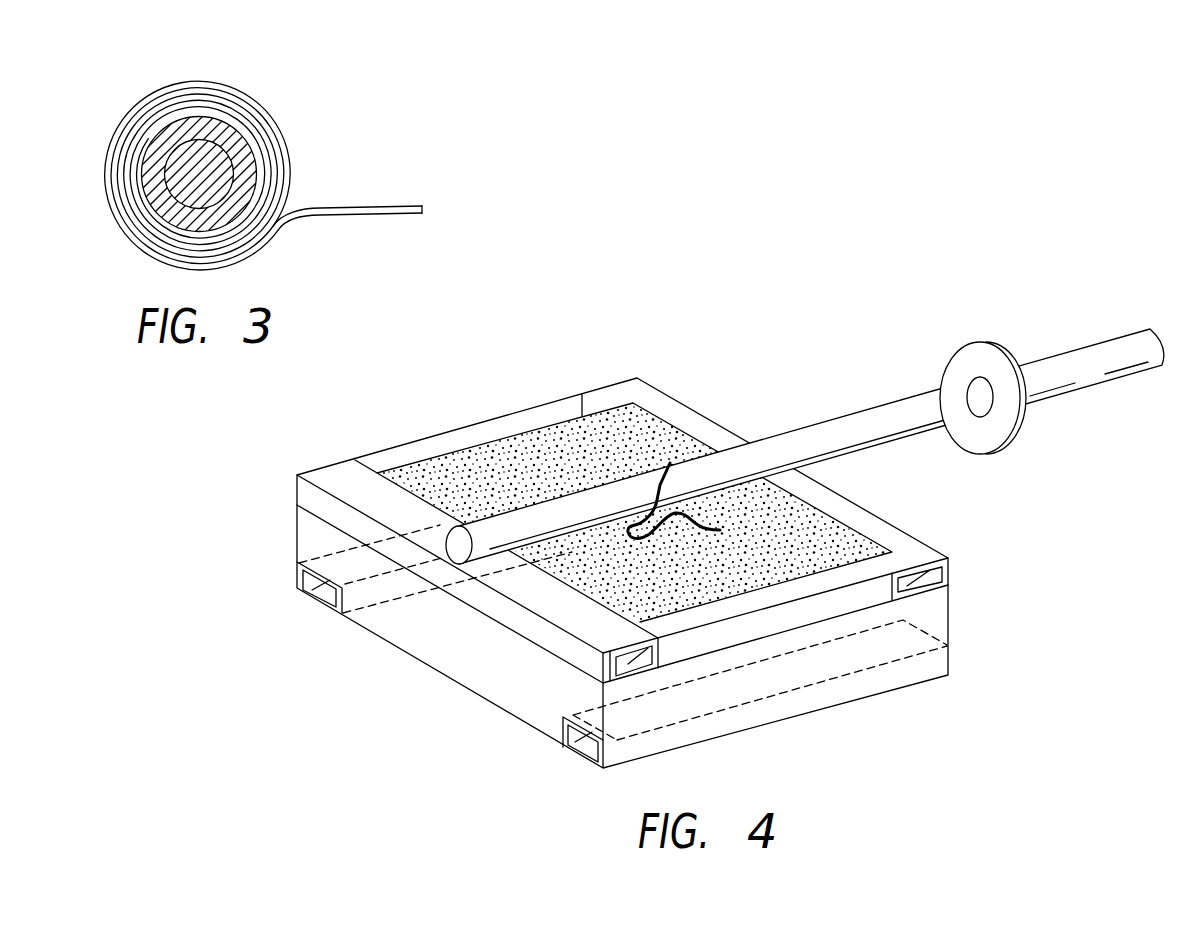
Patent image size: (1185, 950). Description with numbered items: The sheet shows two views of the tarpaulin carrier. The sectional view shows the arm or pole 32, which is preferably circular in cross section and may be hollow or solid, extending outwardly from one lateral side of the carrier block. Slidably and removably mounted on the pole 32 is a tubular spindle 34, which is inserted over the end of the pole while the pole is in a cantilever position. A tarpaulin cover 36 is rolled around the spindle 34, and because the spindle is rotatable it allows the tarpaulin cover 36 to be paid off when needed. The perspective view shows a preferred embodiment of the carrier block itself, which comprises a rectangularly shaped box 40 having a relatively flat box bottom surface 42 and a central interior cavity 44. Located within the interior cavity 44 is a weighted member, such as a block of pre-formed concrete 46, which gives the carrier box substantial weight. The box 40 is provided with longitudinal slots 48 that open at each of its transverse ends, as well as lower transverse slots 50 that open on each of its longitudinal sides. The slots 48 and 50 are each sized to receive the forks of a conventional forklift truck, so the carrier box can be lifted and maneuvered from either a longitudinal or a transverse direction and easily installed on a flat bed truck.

In FIG. 3, the arm or pole 32 is at (205, 165).
In FIG. 4, the arm or pole 32 is at (703, 463).
In FIG. 3, the tubular spindle 34 is at (203, 118).
In FIG. 4, the tubular spindle 34 is at (1040, 368).
In FIG. 3, the tarpaulin cover 36 is at (137, 147).
In FIG. 4, the rectangularly shaped box 40 is at (984, 597).
In FIG. 4, the box bottom surface 42 is at (777, 720).
In FIG. 4, the central interior cavity 44 is at (720, 562).
In FIG. 4, the block of pre-formed concrete 46 is at (632, 598).
In FIG. 4, the longitudinal slots 48 is at (948, 568).
In FIG. 4, the lower transverse slots 50 is at (297, 588).